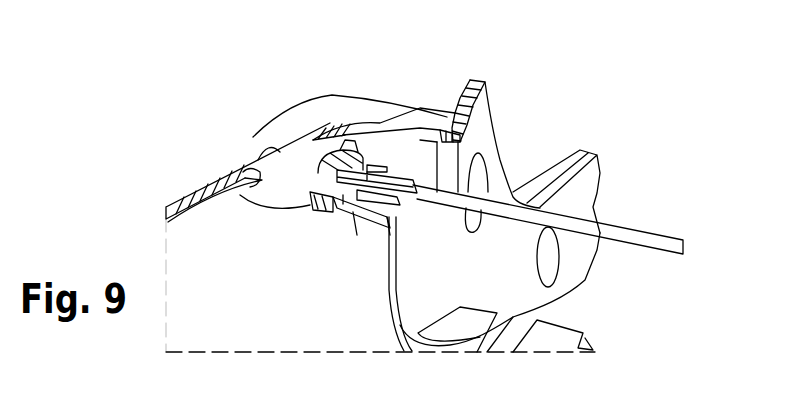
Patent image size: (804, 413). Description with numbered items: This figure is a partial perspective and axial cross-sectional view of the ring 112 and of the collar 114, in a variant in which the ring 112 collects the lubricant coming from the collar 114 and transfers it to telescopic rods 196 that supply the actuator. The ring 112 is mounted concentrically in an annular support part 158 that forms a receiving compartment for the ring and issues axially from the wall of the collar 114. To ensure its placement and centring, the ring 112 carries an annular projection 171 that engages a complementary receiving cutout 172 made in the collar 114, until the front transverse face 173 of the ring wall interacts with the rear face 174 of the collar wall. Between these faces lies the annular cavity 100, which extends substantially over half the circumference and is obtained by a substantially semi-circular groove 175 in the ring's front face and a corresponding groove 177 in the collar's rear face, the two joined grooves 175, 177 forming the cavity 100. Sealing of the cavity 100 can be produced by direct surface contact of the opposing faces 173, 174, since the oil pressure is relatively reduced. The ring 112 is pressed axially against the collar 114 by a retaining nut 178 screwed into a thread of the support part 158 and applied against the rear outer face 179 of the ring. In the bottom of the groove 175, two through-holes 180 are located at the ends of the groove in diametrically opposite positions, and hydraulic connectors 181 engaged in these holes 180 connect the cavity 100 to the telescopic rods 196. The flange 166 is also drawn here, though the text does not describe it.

The annular cavity 100 is at (300, 140).
The ring 112 is at (362, 125).
The collar 114 is at (496, 108).
The annular support part 158 is at (317, 170).
The flange 166 is at (593, 173).
The annular projection 171 is at (258, 203).
The receiving cutout 172 is at (258, 178).
The front transverse face 173 is at (295, 222).
The rear face 174 is at (318, 160).
The semi-circular groove 175 is at (312, 170).
The groove 177 is at (300, 165).
The retaining nut 178 is at (355, 228).
The rear outer face 179 is at (326, 228).
The through-holes 180 is at (347, 140).
The hydraulic connectors 181 is at (387, 168).
The telescopic rods 196 is at (683, 243).